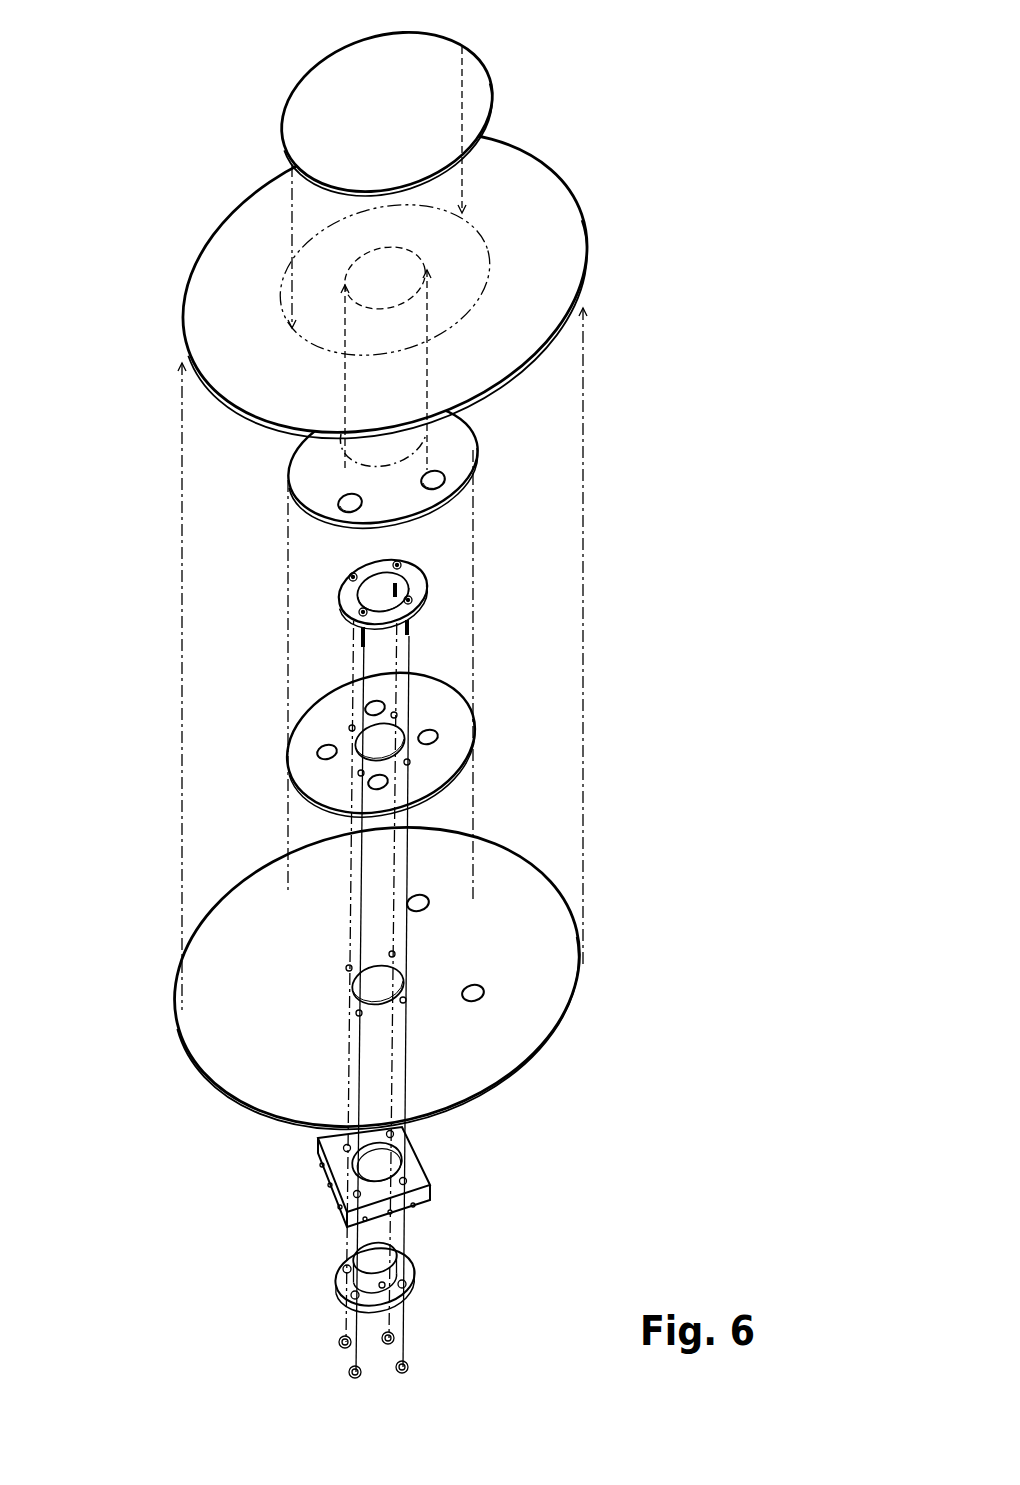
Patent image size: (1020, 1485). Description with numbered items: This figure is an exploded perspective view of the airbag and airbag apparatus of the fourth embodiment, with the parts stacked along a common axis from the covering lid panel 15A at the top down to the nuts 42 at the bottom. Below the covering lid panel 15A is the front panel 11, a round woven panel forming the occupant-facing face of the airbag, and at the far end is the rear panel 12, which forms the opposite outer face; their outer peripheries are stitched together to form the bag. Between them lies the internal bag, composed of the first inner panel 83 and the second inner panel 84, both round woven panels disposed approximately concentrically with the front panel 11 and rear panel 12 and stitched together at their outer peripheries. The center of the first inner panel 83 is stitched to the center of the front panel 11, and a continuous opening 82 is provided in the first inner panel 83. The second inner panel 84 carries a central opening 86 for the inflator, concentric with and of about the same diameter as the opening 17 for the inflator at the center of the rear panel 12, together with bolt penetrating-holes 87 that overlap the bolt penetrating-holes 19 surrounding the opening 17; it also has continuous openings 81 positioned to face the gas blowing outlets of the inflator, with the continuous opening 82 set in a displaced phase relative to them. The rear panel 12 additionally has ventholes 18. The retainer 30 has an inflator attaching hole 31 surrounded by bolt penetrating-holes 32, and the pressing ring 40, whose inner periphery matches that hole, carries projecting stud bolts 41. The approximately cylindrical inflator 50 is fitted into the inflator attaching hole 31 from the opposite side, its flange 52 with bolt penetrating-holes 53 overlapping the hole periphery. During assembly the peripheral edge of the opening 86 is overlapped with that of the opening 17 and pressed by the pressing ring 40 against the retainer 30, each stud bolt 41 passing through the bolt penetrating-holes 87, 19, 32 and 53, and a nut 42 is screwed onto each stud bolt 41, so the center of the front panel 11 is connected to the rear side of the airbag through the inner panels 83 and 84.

The covering lid panel 15A is at (427, 42).
The front panel 11 is at (533, 185).
The first inner panel 83 is at (308, 462).
The continuous opening 82 is at (445, 478).
The pressing ring 40 is at (417, 572).
The stud bolt 41 is at (407, 620).
The second inner panel 84 is at (475, 720).
The opening for the inflator 86 is at (357, 747).
The continuous opening 81 is at (375, 705).
The bolt penetrating-hole 87 is at (352, 728).
The rear panel 12 is at (242, 1082).
The opening for the inflator 17 is at (367, 993).
The venthole 18 is at (420, 897).
The bolt penetrating-hole 19 is at (349, 968).
The retainer 30 is at (428, 1167).
The inflator attaching hole 31 is at (377, 1162).
The bolt penetrating-hole 32 is at (403, 1181).
The inflator 50 is at (390, 1253).
The flange 52 is at (412, 1268).
The bolt penetrating-hole 53 is at (347, 1269).
The nut 42 is at (355, 1372).